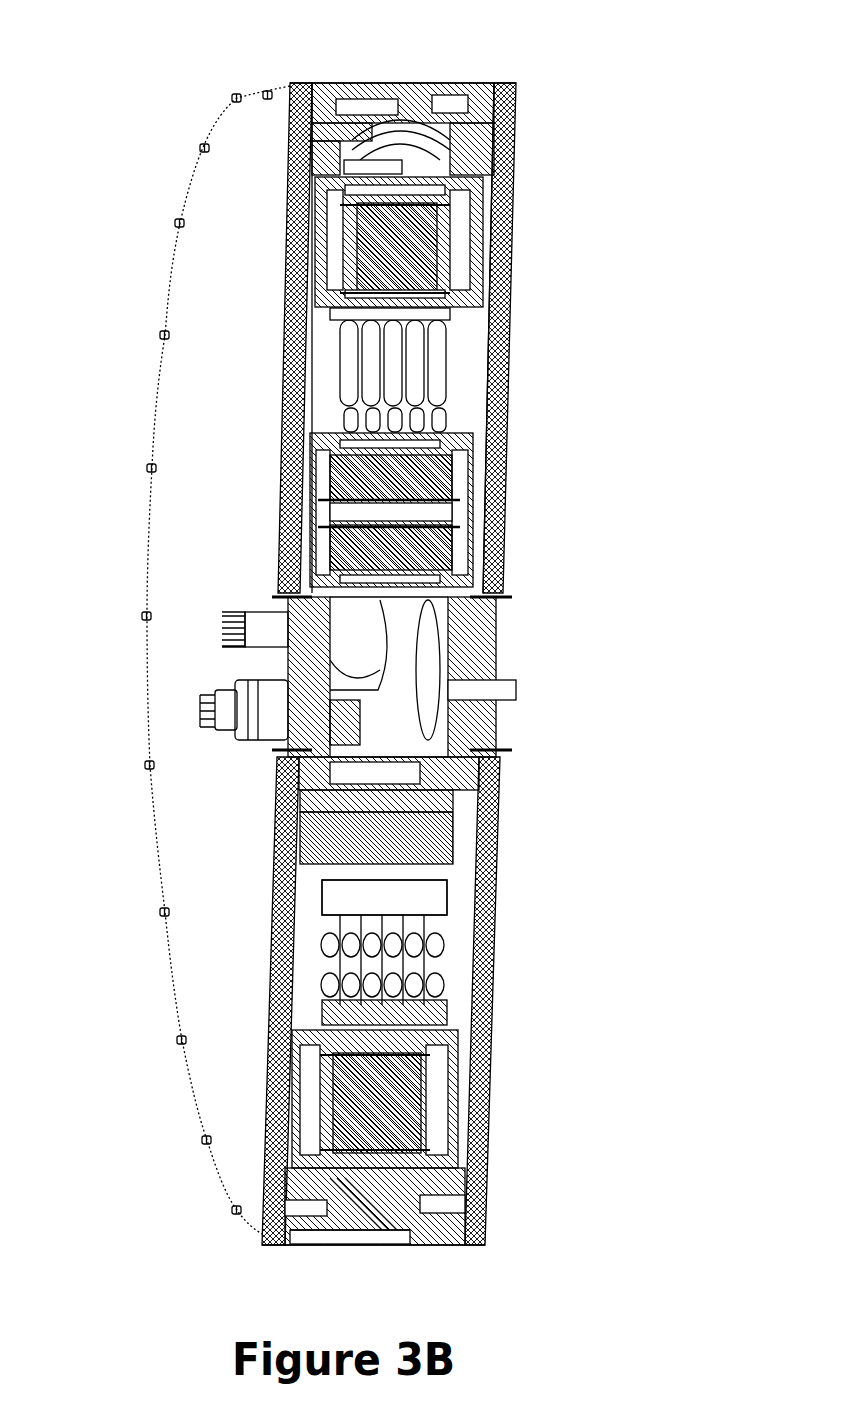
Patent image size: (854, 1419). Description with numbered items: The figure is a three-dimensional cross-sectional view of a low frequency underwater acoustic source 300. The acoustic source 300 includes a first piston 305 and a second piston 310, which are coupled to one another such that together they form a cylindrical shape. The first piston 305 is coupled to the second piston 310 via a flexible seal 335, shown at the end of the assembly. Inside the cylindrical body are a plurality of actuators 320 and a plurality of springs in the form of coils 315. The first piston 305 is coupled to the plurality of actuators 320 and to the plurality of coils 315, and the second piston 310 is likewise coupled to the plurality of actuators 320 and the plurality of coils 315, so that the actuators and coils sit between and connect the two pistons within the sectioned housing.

The low frequency underwater acoustic source 300 is at (92, 1024).
The first piston 305 is at (318, 343).
The second piston 310 is at (467, 907).
The plurality of springs (coils) 315 is at (420, 360).
The plurality of actuators 320 is at (428, 246).
The flexible seal 335 is at (402, 103).